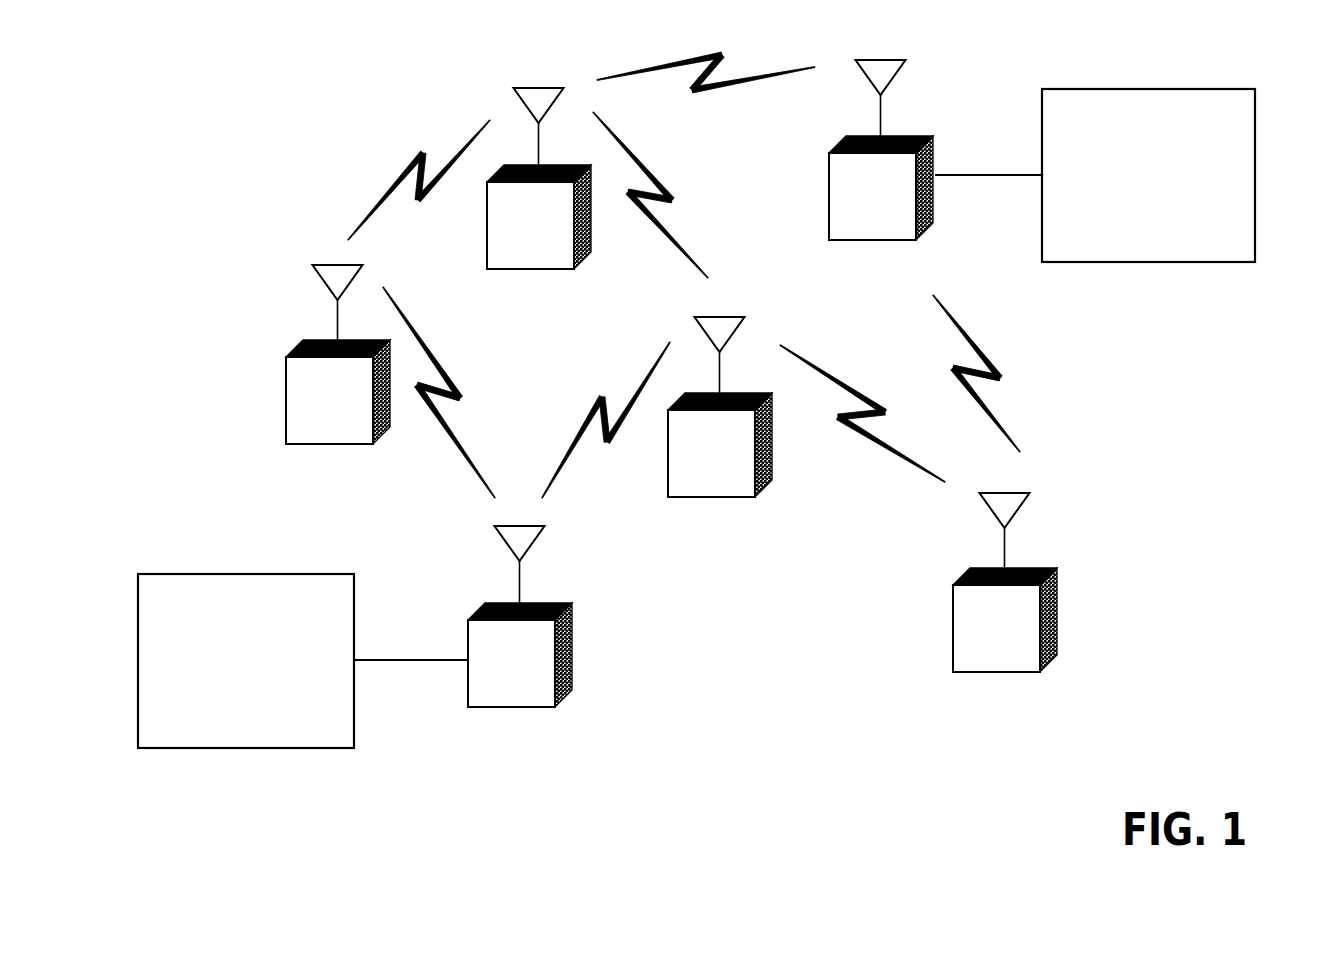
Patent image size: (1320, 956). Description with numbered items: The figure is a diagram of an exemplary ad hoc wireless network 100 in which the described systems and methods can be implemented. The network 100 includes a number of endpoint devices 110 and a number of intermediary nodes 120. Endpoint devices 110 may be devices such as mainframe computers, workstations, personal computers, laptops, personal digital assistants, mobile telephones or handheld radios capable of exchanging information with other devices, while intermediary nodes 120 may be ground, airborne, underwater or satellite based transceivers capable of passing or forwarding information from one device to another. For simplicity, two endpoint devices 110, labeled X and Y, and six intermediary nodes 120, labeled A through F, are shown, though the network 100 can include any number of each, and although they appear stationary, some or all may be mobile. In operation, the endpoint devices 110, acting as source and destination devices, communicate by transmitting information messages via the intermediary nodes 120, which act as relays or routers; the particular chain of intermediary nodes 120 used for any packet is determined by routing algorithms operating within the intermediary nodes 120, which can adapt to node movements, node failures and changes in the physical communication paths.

The network 100 is at (230, 124).
The endpoint device 110 is at (197, 574).
The intermediary node 120 is at (500, 707).